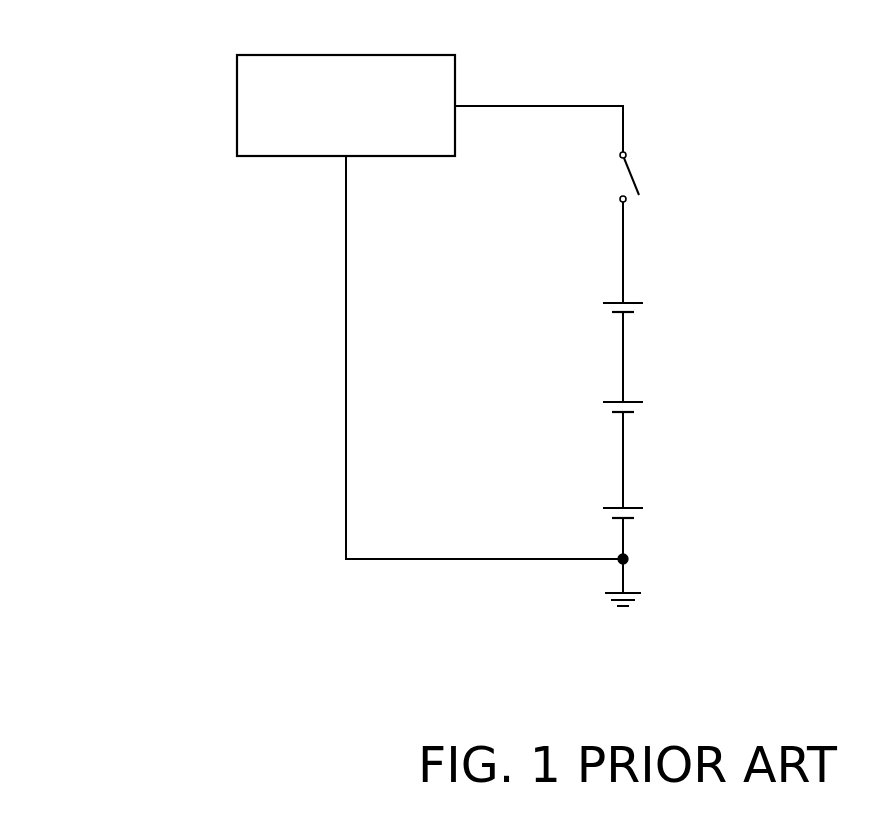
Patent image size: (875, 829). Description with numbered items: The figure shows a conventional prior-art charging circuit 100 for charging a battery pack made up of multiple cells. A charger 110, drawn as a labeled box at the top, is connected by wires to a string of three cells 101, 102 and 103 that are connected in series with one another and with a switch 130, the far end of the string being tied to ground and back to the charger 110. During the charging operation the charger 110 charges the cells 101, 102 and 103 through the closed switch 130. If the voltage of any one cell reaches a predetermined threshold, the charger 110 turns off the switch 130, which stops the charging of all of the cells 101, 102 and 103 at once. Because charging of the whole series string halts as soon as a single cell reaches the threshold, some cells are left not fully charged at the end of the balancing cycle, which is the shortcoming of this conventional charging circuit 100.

The charging circuit 100 is at (145, 119).
The charger 110 is at (358, 140).
The switch 130 is at (634, 172).
The cell 101 is at (634, 303).
The cell 102 is at (634, 402).
The cell 103 is at (634, 508).